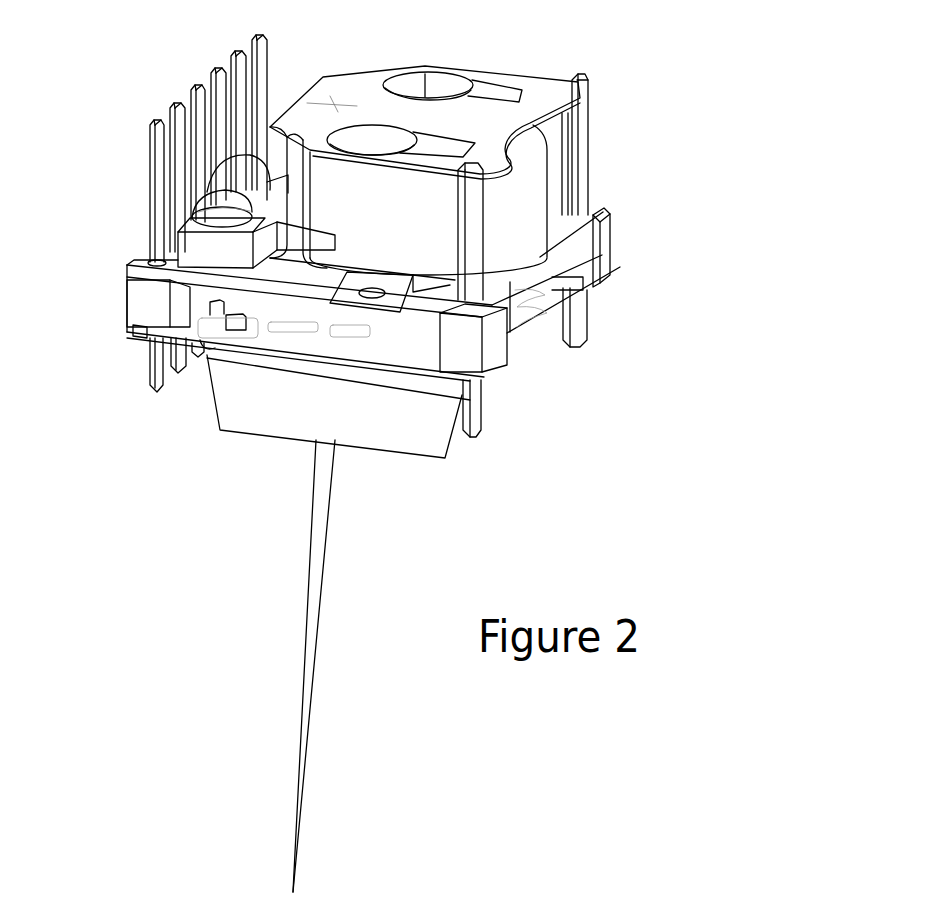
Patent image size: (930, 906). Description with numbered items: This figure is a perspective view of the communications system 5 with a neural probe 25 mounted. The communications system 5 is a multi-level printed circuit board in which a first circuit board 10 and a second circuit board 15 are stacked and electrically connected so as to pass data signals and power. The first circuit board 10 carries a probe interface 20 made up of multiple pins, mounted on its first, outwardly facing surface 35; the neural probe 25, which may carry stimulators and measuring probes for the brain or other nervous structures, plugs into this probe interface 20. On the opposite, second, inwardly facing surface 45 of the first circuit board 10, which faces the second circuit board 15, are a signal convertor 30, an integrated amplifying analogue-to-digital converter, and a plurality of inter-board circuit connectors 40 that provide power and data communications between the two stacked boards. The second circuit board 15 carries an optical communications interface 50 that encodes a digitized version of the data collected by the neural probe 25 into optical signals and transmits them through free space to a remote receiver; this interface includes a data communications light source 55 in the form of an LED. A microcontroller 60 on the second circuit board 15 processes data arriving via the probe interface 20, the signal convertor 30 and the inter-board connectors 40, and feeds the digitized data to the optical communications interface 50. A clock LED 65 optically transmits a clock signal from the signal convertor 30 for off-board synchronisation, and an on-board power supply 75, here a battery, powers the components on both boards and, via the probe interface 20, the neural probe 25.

The communications system 5 is at (100, 68).
The first circuit board 10 is at (540, 333).
The second circuit board 15 is at (593, 207).
The probe interface 20 is at (649, 0).
The neural probe 25 is at (318, 436).
The signal convertor 30 is at (290, 327).
The first (outwardly facing) surface 35 is at (142, 333).
The inter-board circuit connectors 40 is at (202, 209).
The second (inwardly facing) surface 45 is at (443, 357).
The optical communications interface 50 is at (205, 250).
The data communications light source 55 is at (228, 213).
The microcontroller 60 is at (417, 323).
The clock LED 65 is at (257, 167).
The on-board power supply 75 is at (423, 97).